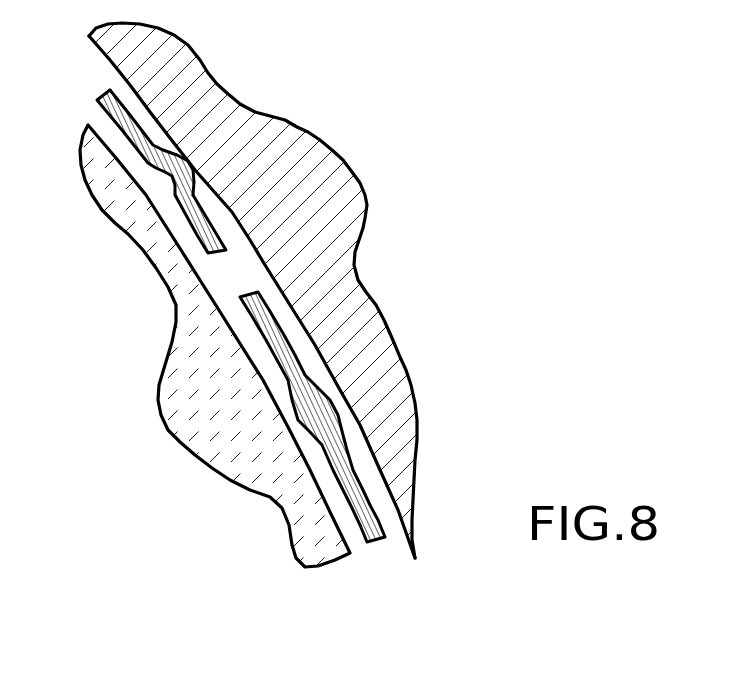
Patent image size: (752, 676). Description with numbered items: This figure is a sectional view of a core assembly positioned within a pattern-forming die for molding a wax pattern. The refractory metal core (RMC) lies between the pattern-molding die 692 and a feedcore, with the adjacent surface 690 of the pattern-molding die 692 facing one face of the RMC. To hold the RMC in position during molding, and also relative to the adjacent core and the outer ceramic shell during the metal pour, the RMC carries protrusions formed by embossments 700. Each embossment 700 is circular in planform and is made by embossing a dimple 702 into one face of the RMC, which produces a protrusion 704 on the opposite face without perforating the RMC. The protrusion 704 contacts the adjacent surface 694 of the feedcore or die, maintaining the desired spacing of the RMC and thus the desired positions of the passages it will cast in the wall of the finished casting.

The adjacent surface 690 is at (290, 348).
The pattern-molding die 692 is at (307, 290).
The adjacent surface 694 is at (238, 400).
The embossment 700 is at (379, 417).
The dimple 702 is at (125, 195).
The protrusion 704 is at (263, 139).